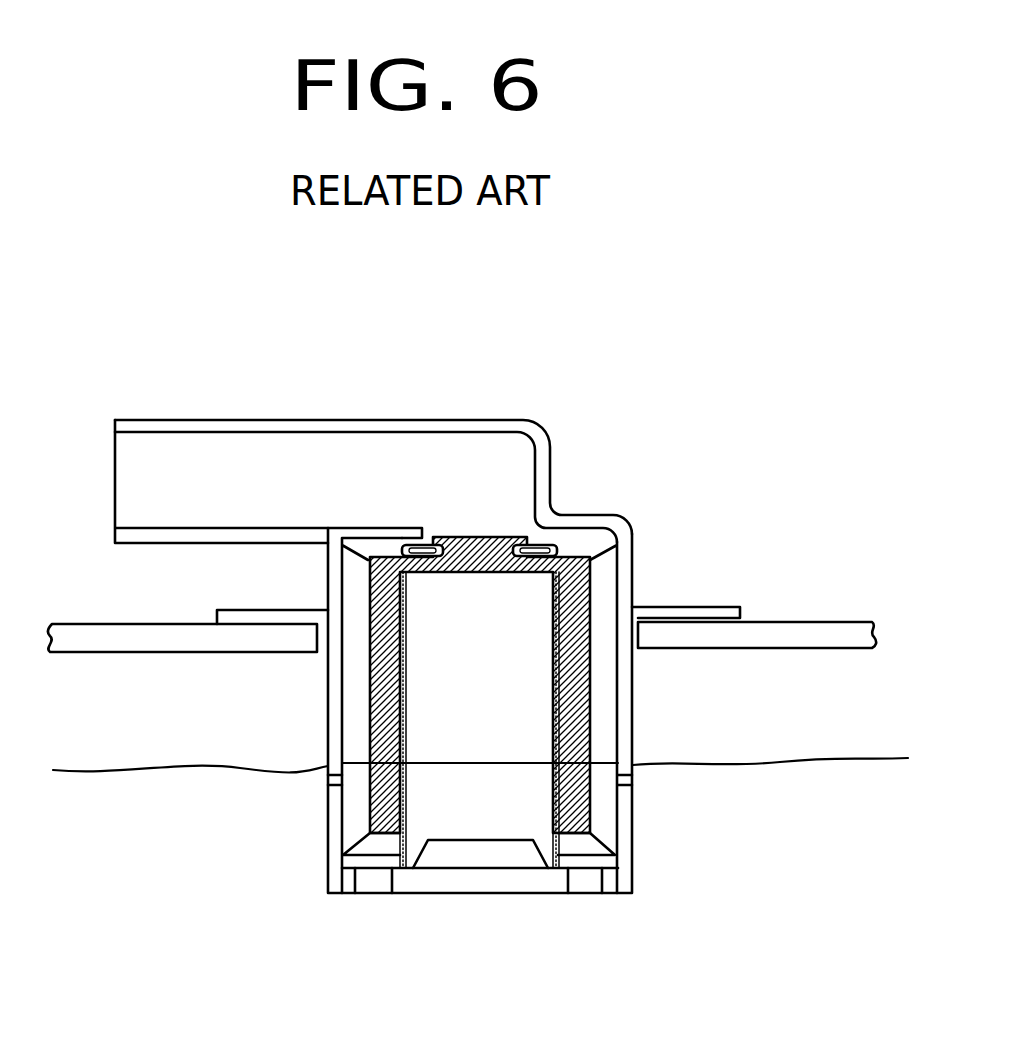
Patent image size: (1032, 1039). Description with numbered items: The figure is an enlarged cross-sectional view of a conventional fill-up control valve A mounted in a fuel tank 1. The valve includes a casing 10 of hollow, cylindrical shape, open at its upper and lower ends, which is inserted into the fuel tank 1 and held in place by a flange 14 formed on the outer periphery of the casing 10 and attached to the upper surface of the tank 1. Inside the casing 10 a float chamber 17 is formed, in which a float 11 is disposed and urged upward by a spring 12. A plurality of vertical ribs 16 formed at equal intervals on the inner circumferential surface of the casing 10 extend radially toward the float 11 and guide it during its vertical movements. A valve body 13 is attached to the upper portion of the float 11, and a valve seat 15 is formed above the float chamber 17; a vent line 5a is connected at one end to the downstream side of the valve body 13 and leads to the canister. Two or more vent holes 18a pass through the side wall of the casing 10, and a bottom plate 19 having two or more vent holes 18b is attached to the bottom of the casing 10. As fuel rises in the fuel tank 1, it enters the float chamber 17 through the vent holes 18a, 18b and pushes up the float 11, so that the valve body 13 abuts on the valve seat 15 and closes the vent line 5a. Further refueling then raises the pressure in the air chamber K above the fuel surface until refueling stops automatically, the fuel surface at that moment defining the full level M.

The fuel tank 1 is at (842, 622).
The vent line 5a is at (220, 420).
The casing 10 is at (327, 840).
The float 11 is at (580, 750).
The spring 12 is at (557, 845).
The valve body 13 is at (543, 542).
The flange 14 is at (717, 607).
The valve seat 15 is at (535, 540).
The vertical ribs 16 is at (600, 687).
The float chamber 17 is at (430, 695).
The vent holes 18a is at (333, 785).
The vent holes 18b is at (592, 884).
The bottom plate 19 is at (465, 884).
The fill-up control valve A is at (640, 520).
The air chamber K is at (838, 717).
The full level M is at (853, 765).